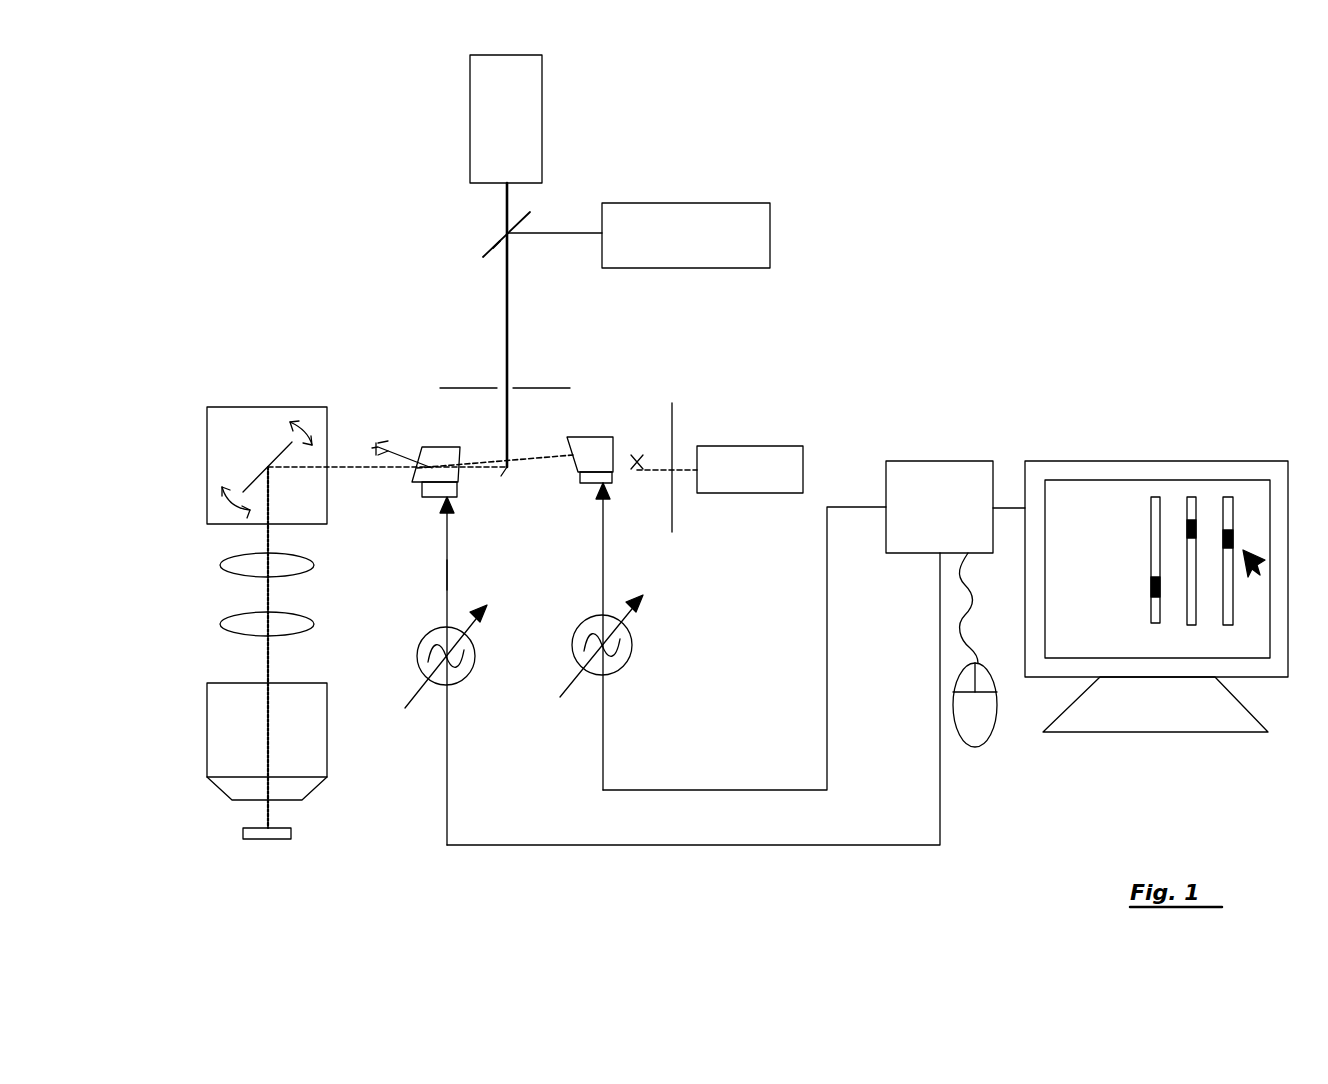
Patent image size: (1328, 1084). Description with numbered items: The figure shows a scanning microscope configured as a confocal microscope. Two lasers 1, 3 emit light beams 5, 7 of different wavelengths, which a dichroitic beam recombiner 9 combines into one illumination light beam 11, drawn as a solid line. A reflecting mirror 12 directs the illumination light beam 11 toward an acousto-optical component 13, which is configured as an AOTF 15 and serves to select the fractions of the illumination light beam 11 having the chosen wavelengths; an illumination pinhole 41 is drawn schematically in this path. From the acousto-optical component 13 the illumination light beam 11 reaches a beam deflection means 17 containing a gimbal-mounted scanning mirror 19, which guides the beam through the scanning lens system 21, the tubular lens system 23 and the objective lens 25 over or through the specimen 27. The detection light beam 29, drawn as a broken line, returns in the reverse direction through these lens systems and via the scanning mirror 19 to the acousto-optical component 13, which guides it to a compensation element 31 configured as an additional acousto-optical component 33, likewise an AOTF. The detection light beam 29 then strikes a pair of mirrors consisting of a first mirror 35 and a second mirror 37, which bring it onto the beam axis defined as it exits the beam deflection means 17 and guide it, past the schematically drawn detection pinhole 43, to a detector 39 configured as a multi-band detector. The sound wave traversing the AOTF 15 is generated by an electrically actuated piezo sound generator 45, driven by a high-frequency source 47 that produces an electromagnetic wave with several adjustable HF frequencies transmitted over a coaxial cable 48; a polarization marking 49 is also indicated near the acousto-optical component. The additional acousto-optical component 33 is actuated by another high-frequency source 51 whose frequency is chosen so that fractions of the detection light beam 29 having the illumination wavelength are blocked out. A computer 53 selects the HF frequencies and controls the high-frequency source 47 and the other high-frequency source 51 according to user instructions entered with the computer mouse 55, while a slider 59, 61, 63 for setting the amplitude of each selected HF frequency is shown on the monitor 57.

The laser 1 is at (530, 97).
The laser 3 is at (697, 240).
The emission light beam 5 is at (507, 217).
The emission light beam 7 is at (553, 233).
The dichroitic beam recombiner 9 is at (493, 248).
The illumination light beam 11 is at (507, 352).
The reflecting mirror 12 is at (513, 463).
The acousto-optical component 13 is at (422, 511).
The AOTF 15 is at (452, 477).
The beam deflection means 17 is at (232, 430).
The scanning mirror 19 is at (253, 475).
The scanning lens system 21 is at (243, 565).
The tubular lens system 23 is at (243, 625).
The objective lens 25 is at (232, 708).
The specimen 27 is at (253, 830).
The detection light beam 29 is at (527, 458).
The compensation element 31 is at (585, 439).
The additional acousto-optical component 33 is at (588, 462).
The first mirror 35 is at (637, 458).
The second mirror 37 is at (633, 477).
The detector 39 is at (780, 453).
The illumination pinhole 41 is at (458, 388).
The detection pinhole 43 is at (675, 427).
The piezo sound generator 45 is at (440, 497).
The high-frequency source 47 is at (477, 652).
The coaxial cable 48 is at (447, 575).
The polarization direction indicator 49 is at (372, 448).
The other high-frequency source 51 is at (631, 641).
The computer 53 is at (922, 470).
The computer mouse 55 is at (977, 728).
The monitor 57 is at (1218, 470).
The slider 59 is at (1228, 590).
The slider 61 is at (1192, 618).
The slider 63 is at (1155, 518).